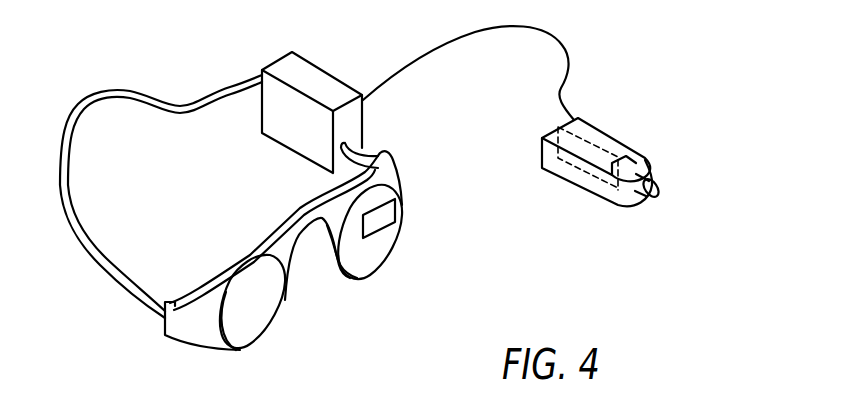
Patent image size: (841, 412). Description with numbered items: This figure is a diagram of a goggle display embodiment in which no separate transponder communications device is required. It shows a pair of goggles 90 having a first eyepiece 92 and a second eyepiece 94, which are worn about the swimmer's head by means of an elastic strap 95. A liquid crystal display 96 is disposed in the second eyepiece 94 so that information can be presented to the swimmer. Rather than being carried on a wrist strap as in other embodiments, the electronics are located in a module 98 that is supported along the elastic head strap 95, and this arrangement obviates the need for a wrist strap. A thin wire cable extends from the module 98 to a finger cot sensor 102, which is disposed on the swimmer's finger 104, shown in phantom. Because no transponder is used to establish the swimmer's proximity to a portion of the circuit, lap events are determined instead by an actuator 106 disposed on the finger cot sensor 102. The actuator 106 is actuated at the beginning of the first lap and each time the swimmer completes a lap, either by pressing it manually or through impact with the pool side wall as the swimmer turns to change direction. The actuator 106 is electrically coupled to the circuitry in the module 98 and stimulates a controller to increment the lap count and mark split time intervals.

The pair of goggles 90 is at (119, 307).
The first eyepiece 92 is at (257, 308).
The second eyepiece 94 is at (367, 248).
The elastic strap 95 is at (193, 106).
The liquid crystal display 96 is at (380, 218).
The module 98 is at (302, 73).
The finger cot sensor 102 is at (603, 181).
The swimmer's finger 104 is at (536, 149).
The actuator 106 is at (655, 193).